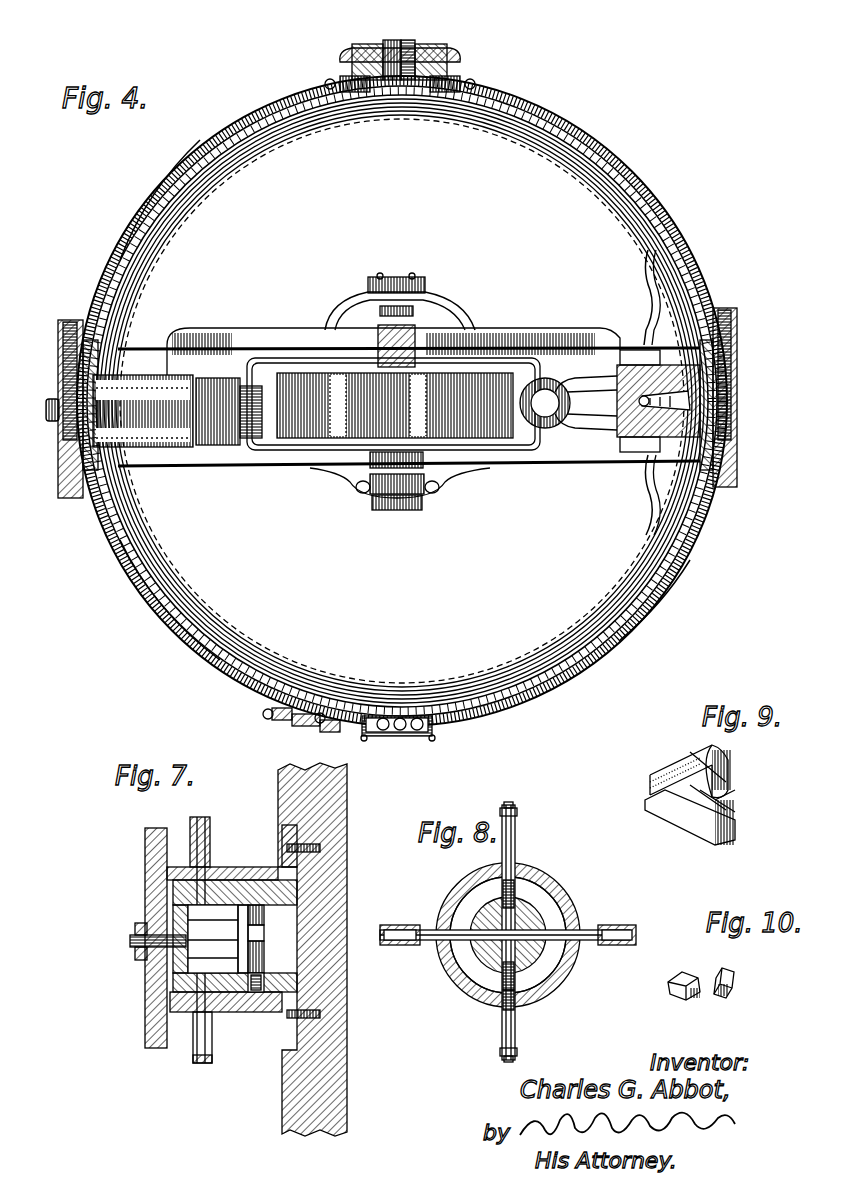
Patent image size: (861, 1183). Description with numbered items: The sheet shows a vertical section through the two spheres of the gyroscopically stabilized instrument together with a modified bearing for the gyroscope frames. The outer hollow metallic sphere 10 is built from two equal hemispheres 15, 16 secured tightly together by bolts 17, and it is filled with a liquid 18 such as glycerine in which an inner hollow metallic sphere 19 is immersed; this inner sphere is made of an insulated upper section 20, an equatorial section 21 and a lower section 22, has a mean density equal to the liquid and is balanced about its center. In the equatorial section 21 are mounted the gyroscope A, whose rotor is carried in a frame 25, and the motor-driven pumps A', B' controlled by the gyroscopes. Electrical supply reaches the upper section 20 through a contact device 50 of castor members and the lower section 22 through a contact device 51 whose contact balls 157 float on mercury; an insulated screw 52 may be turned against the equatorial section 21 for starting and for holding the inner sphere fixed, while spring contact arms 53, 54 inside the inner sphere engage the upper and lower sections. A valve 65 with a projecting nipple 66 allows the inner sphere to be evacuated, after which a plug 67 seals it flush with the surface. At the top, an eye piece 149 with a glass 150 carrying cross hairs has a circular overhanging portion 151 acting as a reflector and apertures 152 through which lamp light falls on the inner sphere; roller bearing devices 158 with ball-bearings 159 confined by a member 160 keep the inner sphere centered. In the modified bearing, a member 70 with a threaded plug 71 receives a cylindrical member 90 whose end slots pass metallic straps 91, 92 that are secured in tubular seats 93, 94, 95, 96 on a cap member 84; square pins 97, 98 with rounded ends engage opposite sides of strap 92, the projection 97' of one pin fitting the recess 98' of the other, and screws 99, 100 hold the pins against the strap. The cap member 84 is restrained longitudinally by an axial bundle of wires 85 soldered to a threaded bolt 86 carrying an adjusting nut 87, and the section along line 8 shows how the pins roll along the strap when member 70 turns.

In FIG. 4, the hollow metallic sphere 10 is at (535, 116).
In FIG. 4, the hemisphere 15 is at (126, 224).
In FIG. 4, the hemisphere 16 is at (176, 640).
In FIG. 4, the bolts 17 is at (68, 320).
In FIG. 4, the liquid 18 is at (612, 160).
In FIG. 4, the inner hollow metallic sphere 19 is at (642, 190).
In FIG. 4, the upper section 20 is at (672, 234).
In FIG. 4, the equatorial section 21 is at (738, 344).
In FIG. 4, the lower section 22 is at (628, 612).
In FIG. 4, the frame 25 is at (438, 308).
In FIG. 4, the contact device 50 is at (452, 80).
In FIG. 4, the contact device 51 is at (372, 736).
In FIG. 4, the insulated screw 52 is at (46, 409).
In FIG. 4, the spring contact arm 53 is at (640, 300).
In FIG. 4, the spring contact arm 54 is at (642, 504).
In FIG. 4, the valve 65 is at (708, 384).
In FIG. 4, the projecting nipple 66 is at (700, 404).
In FIG. 4, the plug 67 is at (712, 414).
In FIG. 7, the member 70 is at (300, 882).
In FIG. 8, the member 70 is at (456, 966).
In FIG. 7, the threaded plug 71 is at (282, 832).
In FIG. 7, the cap member 84 is at (146, 866).
In FIG. 7, the bundle of wires 85 is at (142, 960).
In FIG. 7, the threaded bolt 86 is at (130, 942).
In FIG. 7, the nut 87 is at (135, 928).
In FIG. 7, the cylindrical member 90 is at (292, 935).
In FIG. 8, the cylindrical member 90 is at (548, 905).
In FIG. 9, the cylindrical member 90 is at (730, 776).
In FIG. 7, the metallic strap 91 is at (200, 936).
In FIG. 7, the metallic strap 92 is at (262, 936).
In FIG. 8, the metallic strap 92 is at (590, 930).
In FIG. 7, the seat 93 is at (208, 826).
In FIG. 7, the seat 94 is at (212, 1046).
In FIG. 8, the seat 95 is at (394, 946).
In FIG. 8, the seat 96 is at (612, 945).
In FIG. 7, the square pin 97 is at (263, 913).
In FIG. 8, the square pin 97 is at (540, 882).
In FIG. 10, the square pin 97 is at (682, 995).
In FIG. 10, the projection 97' is at (702, 1003).
In FIG. 7, the square pin 98 is at (265, 957).
In FIG. 8, the square pin 98 is at (546, 984).
In FIG. 10, the square pin 98 is at (740, 983).
In FIG. 10, the recess 98' is at (734, 1001).
In FIG. 7, the screw 99 is at (240, 926).
In FIG. 8, the screw 99 is at (514, 882).
In FIG. 7, the screw 100 is at (250, 970).
In FIG. 8, the screw 100 is at (500, 994).
In FIG. 4, the eye piece 149 is at (398, 52).
In FIG. 4, the glass 150 is at (418, 52).
In FIG. 4, the circular overhanging portion 151 is at (342, 56).
In FIG. 4, the apertures 152 is at (444, 62).
In FIG. 4, the contact balls 157 is at (420, 736).
In FIG. 4, the roller bearing devices 158 is at (268, 720).
In FIG. 4, the ball-bearings 159 is at (324, 732).
In FIG. 4, the member 160 is at (300, 726).
In FIG. 4, the gyroscope A is at (393, 428).
In FIG. 4, the motor-driven pump A' is at (143, 436).
In FIG. 4, the motor-driven pump B' is at (229, 438).
In FIG. 7, the section line 8 is at (270, 802).